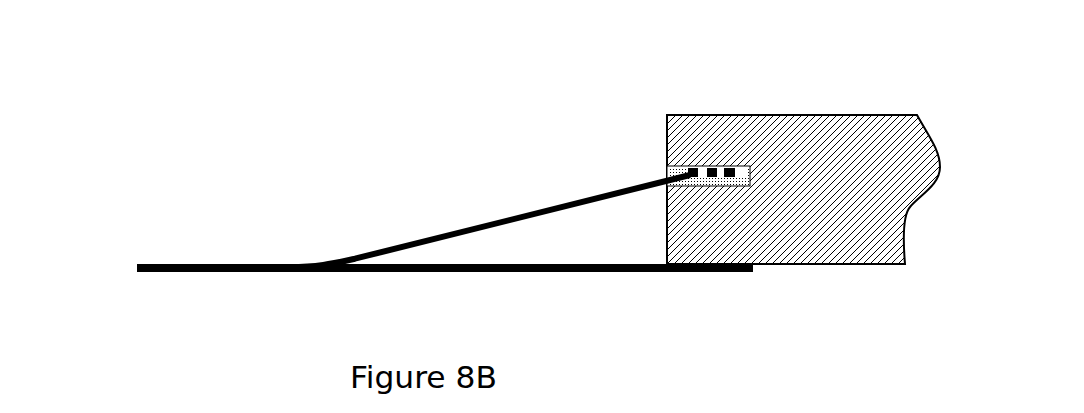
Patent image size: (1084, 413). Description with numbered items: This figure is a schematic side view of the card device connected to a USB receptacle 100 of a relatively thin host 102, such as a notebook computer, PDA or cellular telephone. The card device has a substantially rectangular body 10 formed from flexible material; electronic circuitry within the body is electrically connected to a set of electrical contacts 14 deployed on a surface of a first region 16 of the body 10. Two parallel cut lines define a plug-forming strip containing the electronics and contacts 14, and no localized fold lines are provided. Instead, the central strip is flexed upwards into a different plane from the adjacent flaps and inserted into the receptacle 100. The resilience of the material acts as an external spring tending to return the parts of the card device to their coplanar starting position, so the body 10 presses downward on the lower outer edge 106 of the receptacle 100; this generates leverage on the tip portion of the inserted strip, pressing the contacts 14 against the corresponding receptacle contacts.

The body 10 is at (133, 265).
The first region 16 is at (563, 205).
The electrical contacts 14 is at (668, 163).
The USB receptacle 100 is at (750, 186).
The host 102 is at (830, 265).
The lower outer edge 106 is at (667, 187).